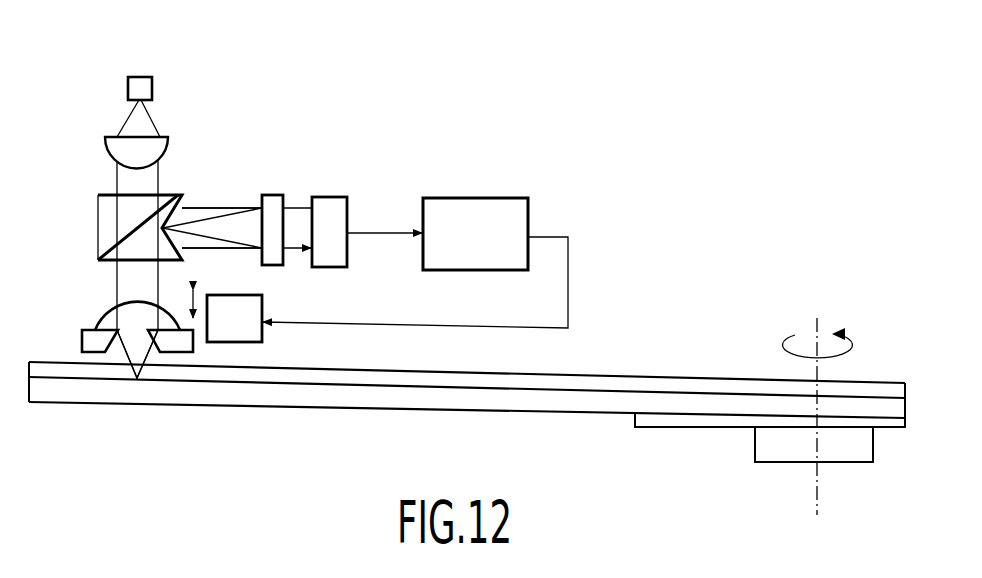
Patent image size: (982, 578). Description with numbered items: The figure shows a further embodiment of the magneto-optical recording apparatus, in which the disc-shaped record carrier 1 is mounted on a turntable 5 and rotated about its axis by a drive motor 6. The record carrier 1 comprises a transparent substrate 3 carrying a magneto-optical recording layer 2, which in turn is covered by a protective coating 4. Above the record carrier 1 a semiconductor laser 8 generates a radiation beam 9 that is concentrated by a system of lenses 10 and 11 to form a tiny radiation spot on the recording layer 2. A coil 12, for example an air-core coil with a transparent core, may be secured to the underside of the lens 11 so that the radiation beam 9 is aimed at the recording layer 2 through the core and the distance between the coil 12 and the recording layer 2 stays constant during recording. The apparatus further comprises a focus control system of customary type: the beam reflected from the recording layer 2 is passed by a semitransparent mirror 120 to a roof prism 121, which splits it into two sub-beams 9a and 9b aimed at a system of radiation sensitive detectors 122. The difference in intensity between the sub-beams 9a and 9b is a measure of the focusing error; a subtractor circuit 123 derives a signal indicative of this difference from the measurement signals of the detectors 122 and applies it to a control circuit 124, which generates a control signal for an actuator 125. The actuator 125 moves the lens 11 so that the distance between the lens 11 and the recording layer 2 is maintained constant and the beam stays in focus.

The record carrier 1 is at (872, 382).
The magneto-optical recording layer 2 is at (643, 388).
The transparent substrate 3 is at (692, 386).
The protective coating 4 is at (389, 404).
The turntable 5 is at (660, 428).
The drive motor 6 is at (778, 450).
The semiconductor laser 8 is at (128, 86).
The radiation beam 9 is at (128, 352).
The first sub-beam 9a is at (210, 207).
The second sub-beam 9b is at (216, 249).
The lens 10 is at (105, 140).
The lens 11 is at (106, 316).
The coil 12 is at (82, 340).
The semitransparent mirror 120 is at (133, 226).
The roof prism 121 is at (180, 198).
The system of radiation sensitive detectors 122 is at (272, 195).
The subtractor circuit 123 is at (330, 197).
The control circuit 124 is at (472, 198).
The actuator 125 is at (263, 307).